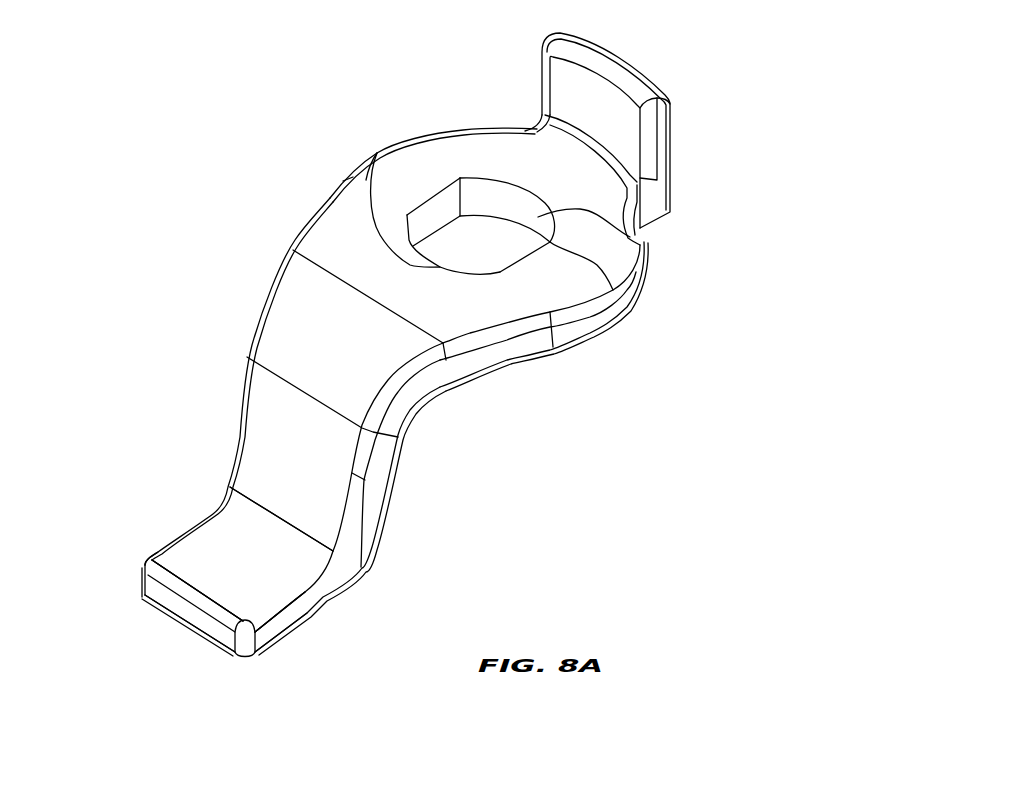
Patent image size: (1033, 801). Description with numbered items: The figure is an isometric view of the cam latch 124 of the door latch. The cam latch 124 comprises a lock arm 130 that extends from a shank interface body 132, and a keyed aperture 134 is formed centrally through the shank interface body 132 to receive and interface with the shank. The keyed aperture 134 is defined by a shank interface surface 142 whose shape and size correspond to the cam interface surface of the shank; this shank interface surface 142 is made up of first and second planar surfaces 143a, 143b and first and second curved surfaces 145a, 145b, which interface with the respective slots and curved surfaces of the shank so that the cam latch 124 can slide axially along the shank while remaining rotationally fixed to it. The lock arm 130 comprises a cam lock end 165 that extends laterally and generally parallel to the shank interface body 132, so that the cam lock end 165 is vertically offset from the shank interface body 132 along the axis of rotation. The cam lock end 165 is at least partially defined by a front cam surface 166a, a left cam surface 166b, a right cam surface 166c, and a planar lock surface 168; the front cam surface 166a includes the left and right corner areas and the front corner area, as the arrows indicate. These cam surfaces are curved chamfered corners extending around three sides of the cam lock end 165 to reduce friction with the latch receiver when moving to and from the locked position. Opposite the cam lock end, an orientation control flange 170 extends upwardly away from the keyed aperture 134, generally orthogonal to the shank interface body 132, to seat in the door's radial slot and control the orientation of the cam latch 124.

The cam latch 124 is at (406, 378).
The lock arm 130 is at (333, 617).
The shank interface body 132 is at (487, 313).
The keyed aperture 134 is at (493, 236).
The shank interface surface 142 is at (528, 197).
The first planar surface 143a is at (438, 213).
The second planar surface 143b is at (598, 282).
The first curved surface 145a is at (630, 237).
The second curved surface 145b is at (377, 152).
The cam lock end 165 is at (277, 681).
The front cam surface 166a is at (133, 553).
The left cam surface 166b is at (305, 610).
The right cam surface 166c is at (150, 536).
The planar lock surface 168 is at (198, 542).
The orientation control flange 170 is at (613, 60).